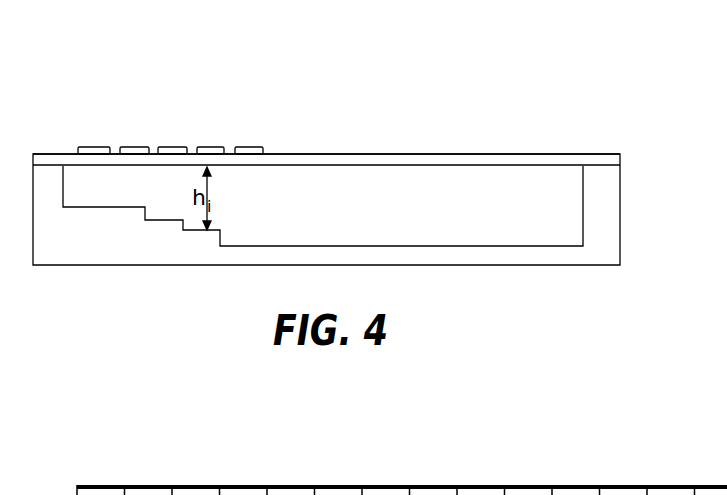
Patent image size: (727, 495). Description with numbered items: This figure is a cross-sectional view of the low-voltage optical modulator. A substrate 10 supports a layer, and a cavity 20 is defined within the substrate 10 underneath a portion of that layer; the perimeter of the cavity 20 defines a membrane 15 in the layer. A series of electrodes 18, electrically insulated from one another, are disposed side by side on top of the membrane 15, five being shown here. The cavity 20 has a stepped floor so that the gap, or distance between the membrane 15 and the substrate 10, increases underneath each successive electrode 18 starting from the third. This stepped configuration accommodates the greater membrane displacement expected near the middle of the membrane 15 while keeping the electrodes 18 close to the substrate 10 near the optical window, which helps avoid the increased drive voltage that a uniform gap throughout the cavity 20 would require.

The substrate 10 is at (106, 248).
The membrane 15 is at (382, 153).
The cavity 20 is at (362, 220).
The electrodes 18 is at (205, 89).